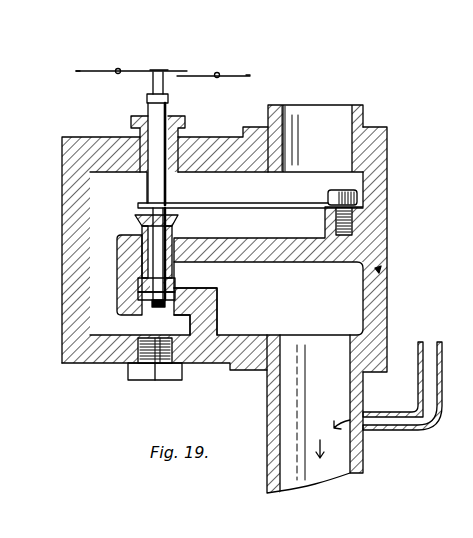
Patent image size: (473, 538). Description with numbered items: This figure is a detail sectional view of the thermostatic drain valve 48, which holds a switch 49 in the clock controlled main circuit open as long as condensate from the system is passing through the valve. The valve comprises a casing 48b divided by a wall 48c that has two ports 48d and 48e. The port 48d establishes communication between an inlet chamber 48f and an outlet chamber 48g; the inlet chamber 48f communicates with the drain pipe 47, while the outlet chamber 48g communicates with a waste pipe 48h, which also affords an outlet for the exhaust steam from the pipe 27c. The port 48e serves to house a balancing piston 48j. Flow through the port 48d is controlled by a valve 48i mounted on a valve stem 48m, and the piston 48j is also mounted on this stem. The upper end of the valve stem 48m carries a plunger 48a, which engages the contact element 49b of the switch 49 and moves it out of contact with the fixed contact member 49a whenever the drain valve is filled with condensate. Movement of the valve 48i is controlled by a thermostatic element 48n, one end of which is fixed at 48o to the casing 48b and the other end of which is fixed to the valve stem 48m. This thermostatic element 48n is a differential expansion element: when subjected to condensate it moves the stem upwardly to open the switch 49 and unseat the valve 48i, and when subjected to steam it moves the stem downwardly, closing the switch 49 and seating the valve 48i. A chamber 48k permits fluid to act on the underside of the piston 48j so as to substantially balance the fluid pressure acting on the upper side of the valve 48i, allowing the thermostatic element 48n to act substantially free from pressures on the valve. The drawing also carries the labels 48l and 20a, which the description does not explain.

The thermostatic drain valve 48 is at (58, 266).
The plunger 48a is at (168, 85).
The casing 48b is at (389, 285).
The wall 48c is at (302, 263).
The port 48d is at (178, 258).
The port 48e is at (146, 313).
The inlet chamber 48f is at (212, 170).
The outlet chamber 48g is at (222, 363).
The waste pipe 48h is at (267, 476).
The valve 48i is at (143, 236).
The balancing piston 48j is at (218, 297).
The chamber 48k is at (94, 364).
The collar 48l is at (136, 216).
The valve stem 48m is at (168, 189).
The thermostatic element 48n is at (258, 207).
The fixed end of thermostatic element 48o is at (330, 202).
The drain pipe 47 is at (366, 116).
The switch 49 is at (200, 60).
The fixed contact member 49a is at (217, 73).
The contact element 49b is at (162, 70).
The link rods 20a is at (231, 86).
The pipe 27c is at (410, 433).